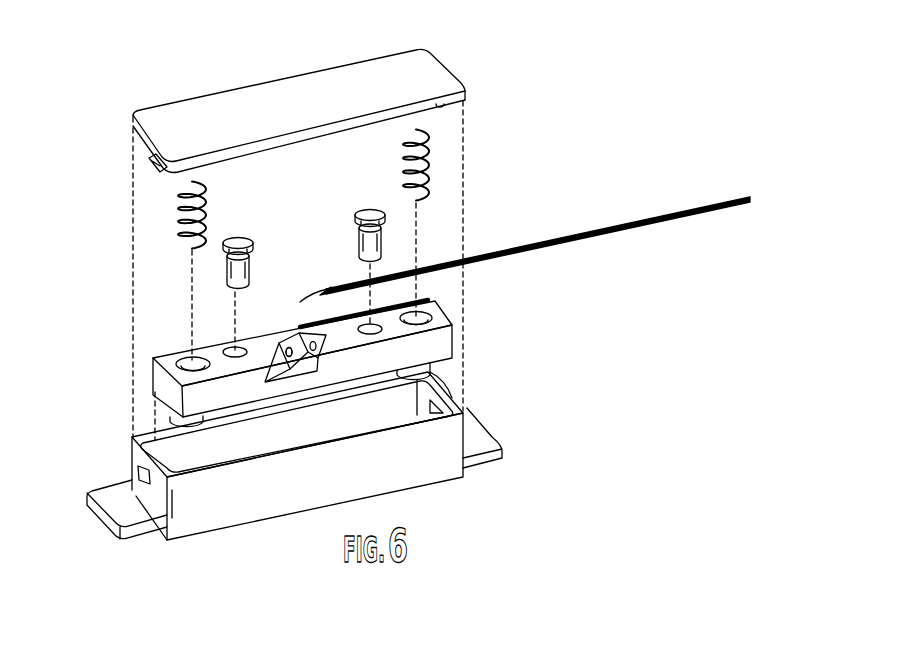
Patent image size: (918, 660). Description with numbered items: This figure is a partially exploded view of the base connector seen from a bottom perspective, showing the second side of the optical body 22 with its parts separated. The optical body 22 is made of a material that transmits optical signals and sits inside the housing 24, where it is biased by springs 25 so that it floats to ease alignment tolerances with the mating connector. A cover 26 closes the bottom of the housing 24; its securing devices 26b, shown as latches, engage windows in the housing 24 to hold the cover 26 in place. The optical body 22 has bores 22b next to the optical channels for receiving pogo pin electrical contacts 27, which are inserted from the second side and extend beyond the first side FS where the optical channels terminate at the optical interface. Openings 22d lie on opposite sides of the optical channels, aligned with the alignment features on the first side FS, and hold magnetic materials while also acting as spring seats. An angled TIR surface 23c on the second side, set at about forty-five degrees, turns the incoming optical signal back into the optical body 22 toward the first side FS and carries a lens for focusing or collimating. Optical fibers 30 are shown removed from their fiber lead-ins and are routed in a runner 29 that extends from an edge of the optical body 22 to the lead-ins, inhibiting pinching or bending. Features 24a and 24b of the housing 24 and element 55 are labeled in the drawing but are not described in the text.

The optical body 22 is at (453, 341).
The bores 22b is at (236, 349).
The openings 22d is at (188, 366).
The TIR surface 23c is at (276, 352).
The housing 24 is at (464, 413).
The mounting feet 24a is at (117, 541).
The end wall aperture 24b is at (137, 477).
The springs 25 is at (431, 146).
The cover 26 is at (458, 79).
The securing devices 26b is at (150, 165).
The electrical contacts 27 is at (258, 250).
The runner 29 is at (392, 302).
The optical fibers 30 is at (717, 205).
The clip 55 is at (283, 340).
The first side FS is at (442, 363).